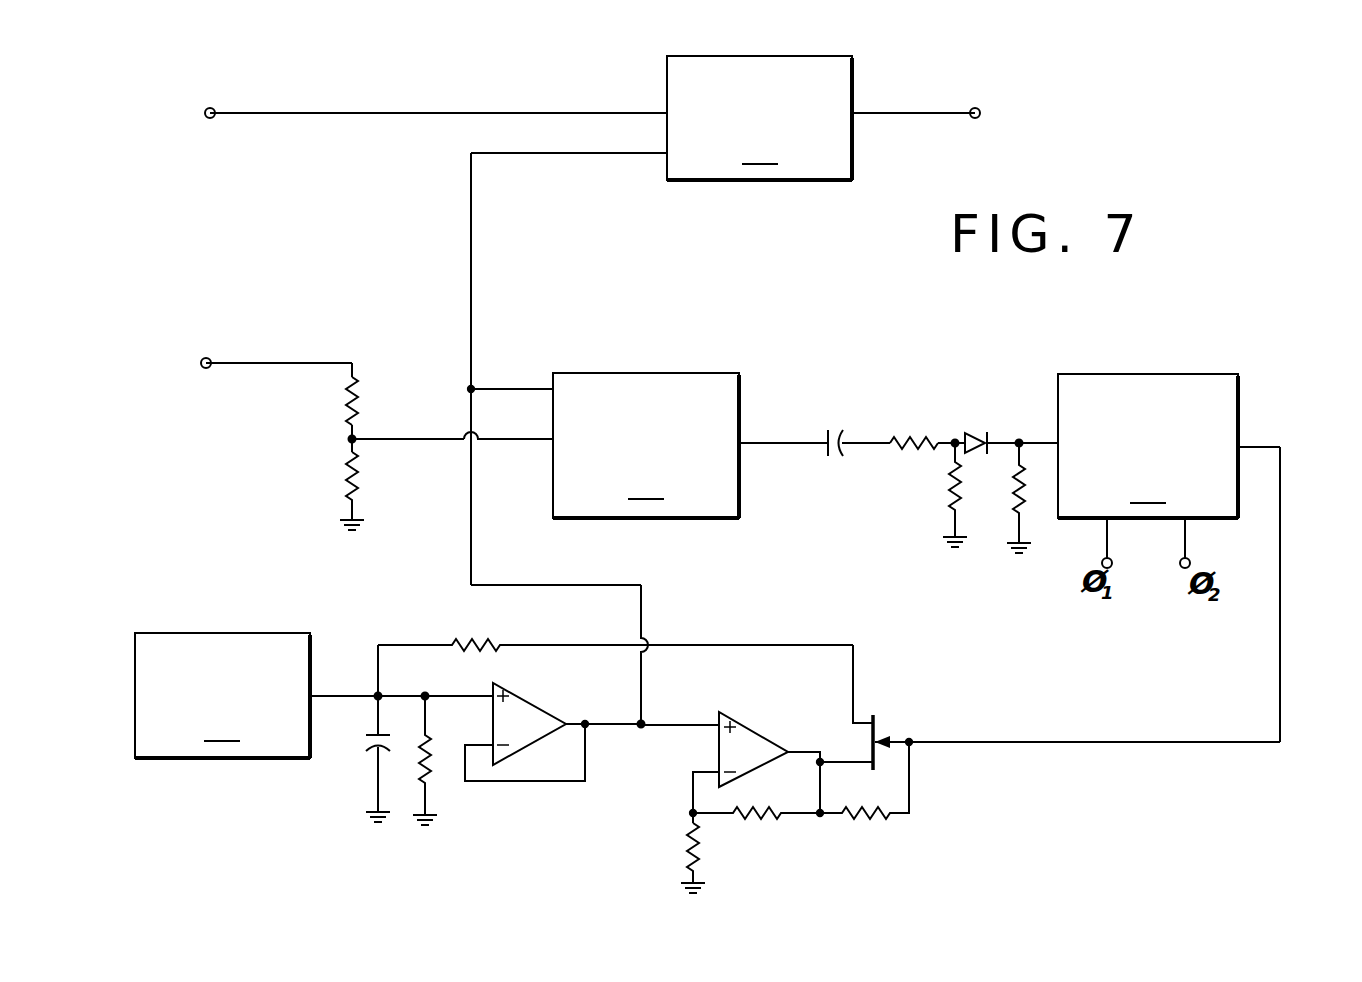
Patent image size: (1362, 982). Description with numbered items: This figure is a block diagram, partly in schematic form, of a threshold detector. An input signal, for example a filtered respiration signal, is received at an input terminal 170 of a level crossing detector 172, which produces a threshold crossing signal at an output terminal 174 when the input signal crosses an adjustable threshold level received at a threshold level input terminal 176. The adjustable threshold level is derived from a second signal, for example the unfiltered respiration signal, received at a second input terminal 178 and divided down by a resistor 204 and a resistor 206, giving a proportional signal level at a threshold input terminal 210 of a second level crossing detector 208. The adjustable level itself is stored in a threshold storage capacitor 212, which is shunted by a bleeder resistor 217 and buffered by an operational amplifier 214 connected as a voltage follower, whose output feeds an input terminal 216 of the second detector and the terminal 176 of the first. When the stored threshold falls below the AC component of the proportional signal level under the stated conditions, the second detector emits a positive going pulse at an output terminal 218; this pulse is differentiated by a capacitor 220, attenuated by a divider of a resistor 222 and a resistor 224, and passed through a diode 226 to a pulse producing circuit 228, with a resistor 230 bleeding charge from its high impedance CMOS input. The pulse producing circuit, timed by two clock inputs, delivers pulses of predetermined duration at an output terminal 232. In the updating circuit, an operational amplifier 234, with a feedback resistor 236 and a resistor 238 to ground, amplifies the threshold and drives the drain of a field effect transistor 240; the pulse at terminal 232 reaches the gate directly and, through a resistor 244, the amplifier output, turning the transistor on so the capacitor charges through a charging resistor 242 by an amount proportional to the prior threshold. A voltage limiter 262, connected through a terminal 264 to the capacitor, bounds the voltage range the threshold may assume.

The input terminal 170 is at (252, 84).
The level crossing detector 172 is at (759, 118).
The output terminal 174 is at (1012, 95).
The threshold level input terminal 176 is at (655, 153).
The second input terminal 178 is at (243, 330).
The resistor 204 is at (360, 399).
The resistor 206 is at (362, 483).
The second level crossing detector 208 is at (646, 445).
The threshold input terminal 210 is at (498, 440).
The threshold storage capacitor 212 is at (374, 758).
The operational amplifier 214 is at (520, 695).
The input terminal 216 is at (538, 360).
The bleeder resistor 217 is at (432, 752).
The output terminal 218 is at (752, 441).
The capacitor 220 is at (828, 452).
The resistor 222 is at (930, 415).
The resistor 224 is at (950, 490).
The diode 226 is at (975, 432).
The pulse producing circuit 228 is at (1148, 446).
The resistor 230 is at (1012, 495).
The output terminal 232 is at (1258, 447).
The operational amplifier 234 is at (748, 726).
The feedback resistor 236 is at (745, 830).
The resistor 238 is at (690, 835).
The field effect transistor 240 is at (876, 728).
The charging resistor 242 is at (478, 645).
The resistor 244 is at (865, 825).
The voltage limiter 262 is at (222, 695).
The terminal 264 is at (352, 696).